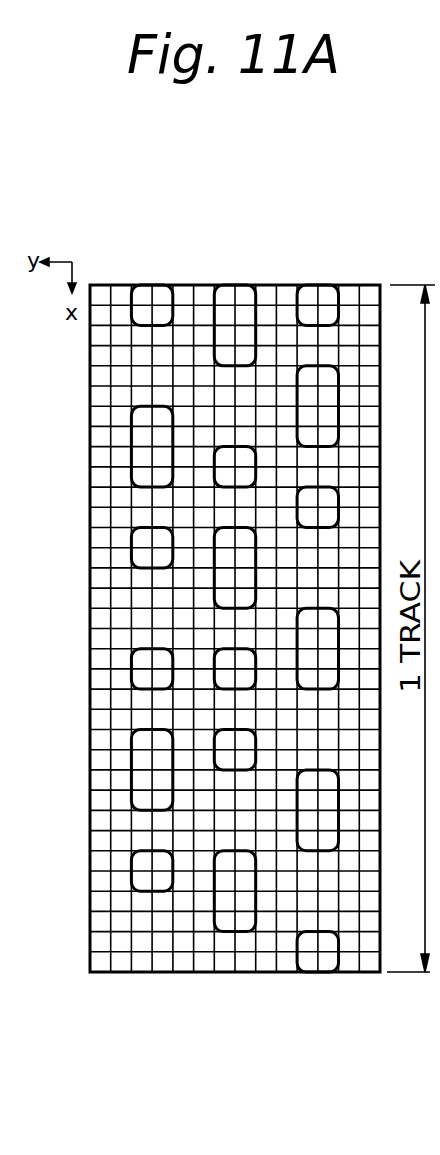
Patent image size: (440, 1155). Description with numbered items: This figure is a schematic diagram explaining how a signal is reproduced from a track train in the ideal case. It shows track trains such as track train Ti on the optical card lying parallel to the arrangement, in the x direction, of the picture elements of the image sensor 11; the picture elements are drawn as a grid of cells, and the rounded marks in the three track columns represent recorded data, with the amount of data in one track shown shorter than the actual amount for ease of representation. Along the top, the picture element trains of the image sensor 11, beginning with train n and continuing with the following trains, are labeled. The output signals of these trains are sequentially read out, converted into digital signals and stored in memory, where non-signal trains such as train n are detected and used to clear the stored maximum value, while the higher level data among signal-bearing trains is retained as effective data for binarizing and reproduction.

The image sensor 11 is at (91, 882).
The track train Ti is at (140, 973).
The train n is at (172, 293).